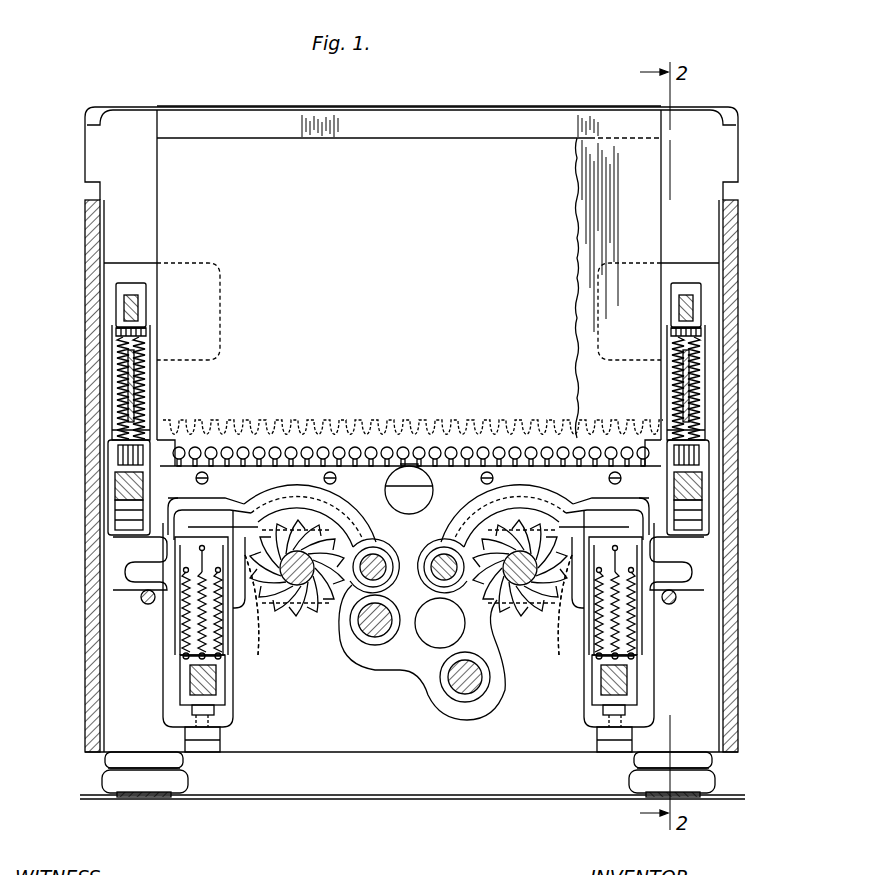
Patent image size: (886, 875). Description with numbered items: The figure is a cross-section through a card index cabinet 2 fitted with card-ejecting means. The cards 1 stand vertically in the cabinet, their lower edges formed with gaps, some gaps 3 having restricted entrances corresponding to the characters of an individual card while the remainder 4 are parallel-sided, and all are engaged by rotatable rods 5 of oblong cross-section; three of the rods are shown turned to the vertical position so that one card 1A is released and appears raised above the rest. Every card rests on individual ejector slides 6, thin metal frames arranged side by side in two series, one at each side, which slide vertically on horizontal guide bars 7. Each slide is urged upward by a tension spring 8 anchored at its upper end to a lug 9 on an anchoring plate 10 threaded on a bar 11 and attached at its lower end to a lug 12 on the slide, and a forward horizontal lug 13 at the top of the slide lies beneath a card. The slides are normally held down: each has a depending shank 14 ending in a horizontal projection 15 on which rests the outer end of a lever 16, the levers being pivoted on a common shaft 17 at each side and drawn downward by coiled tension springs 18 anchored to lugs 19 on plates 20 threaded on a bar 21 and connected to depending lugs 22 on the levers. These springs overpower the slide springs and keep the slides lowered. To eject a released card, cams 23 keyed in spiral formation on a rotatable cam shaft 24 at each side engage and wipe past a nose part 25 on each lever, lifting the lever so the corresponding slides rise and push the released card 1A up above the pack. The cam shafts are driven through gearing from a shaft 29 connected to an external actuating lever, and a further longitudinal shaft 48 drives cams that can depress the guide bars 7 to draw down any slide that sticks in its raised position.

The cards 1 is at (515, 150).
The released card 1A is at (423, 118).
The cabinet 2 is at (735, 226).
The gaps 3 is at (603, 466).
The parallel-sided gaps 4 is at (525, 420).
The rotatable rods 5 is at (432, 462).
The ejector slides 6 is at (705, 452).
The guide bars 7 is at (705, 485).
The tension spring 8 is at (700, 375).
The lug 9 is at (705, 335).
The anchoring plate 10 is at (687, 292).
The bar 11 is at (695, 302).
The lug 12 is at (710, 430).
The forward horizontal lug 13 is at (640, 466).
The depending shank 14 is at (705, 557).
The horizontal projection 15 is at (678, 598).
The lever 16 is at (600, 505).
The shaft 17 is at (390, 557).
The coiled tension springs 18 is at (599, 630).
The lugs 19 is at (640, 655).
The plates 20 is at (592, 682).
The bar 21 is at (625, 685).
The depending lugs 22 is at (600, 520).
The cam 23 is at (505, 615).
The cam shaft 24 is at (330, 547).
The lug or nose part 25 is at (560, 600).
The shaft 29 is at (460, 685).
The longitudinal shaft 48 is at (375, 645).